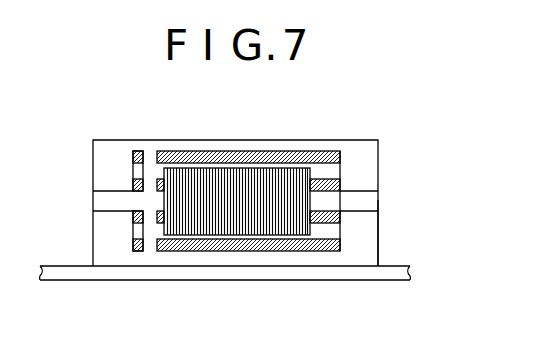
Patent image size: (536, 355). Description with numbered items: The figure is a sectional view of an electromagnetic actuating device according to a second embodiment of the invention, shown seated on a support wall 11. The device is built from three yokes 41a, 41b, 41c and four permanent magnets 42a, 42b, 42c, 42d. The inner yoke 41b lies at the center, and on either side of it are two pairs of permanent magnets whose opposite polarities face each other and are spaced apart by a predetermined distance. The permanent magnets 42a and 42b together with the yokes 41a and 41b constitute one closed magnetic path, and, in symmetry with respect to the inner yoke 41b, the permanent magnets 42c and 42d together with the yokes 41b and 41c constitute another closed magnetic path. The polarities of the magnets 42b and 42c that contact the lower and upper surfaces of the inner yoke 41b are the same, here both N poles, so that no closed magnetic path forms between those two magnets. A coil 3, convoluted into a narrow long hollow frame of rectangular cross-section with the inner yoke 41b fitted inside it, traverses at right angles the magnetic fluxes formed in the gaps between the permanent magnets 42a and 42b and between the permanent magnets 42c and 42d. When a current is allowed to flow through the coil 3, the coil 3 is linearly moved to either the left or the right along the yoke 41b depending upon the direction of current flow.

The coil 3 is at (280, 213).
The support wall 11 is at (73, 268).
The yoke 41a is at (365, 257).
The inner yoke 41b is at (367, 202).
The yoke 41c is at (363, 160).
The permanent magnet 42a is at (325, 252).
The permanent magnet 42b is at (342, 218).
The permanent magnet 42c is at (340, 182).
The permanent magnet 42d is at (323, 152).